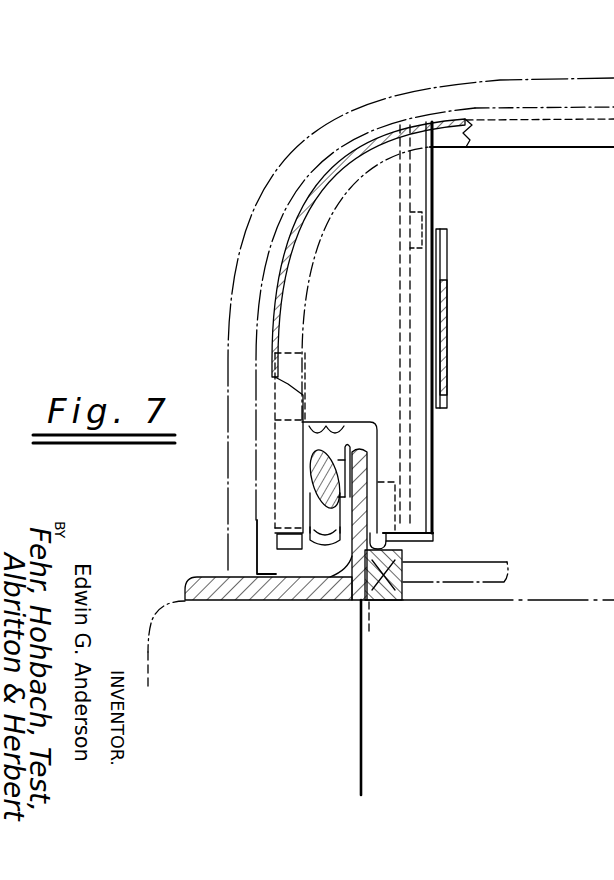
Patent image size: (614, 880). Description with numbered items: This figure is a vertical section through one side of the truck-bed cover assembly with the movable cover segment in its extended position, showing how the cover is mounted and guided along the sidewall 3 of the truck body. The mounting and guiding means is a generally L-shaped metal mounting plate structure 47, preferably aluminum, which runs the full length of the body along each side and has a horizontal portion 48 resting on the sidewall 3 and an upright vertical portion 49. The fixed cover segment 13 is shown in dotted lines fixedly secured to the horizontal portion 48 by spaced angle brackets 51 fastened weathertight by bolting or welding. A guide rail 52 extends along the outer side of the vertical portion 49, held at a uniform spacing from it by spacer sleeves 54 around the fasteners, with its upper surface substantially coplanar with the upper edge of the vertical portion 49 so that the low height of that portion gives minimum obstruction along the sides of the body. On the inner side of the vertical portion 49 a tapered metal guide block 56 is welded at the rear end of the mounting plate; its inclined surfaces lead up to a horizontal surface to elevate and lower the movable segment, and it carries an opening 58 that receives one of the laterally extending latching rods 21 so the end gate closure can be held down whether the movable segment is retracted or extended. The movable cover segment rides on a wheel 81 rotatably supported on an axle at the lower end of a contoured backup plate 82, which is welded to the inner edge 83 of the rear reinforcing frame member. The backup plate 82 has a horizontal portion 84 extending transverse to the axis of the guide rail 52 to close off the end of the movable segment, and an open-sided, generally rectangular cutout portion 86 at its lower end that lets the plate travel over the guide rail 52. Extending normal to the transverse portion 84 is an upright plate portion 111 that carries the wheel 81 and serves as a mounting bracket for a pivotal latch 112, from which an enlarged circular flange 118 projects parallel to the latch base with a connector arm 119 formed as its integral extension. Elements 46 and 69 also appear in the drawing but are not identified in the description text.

The sidewalls 3 is at (153, 632).
The cover segment 13 is at (578, 76).
The latching rods 21 is at (492, 562).
The base flange 46 is at (390, 609).
The mounting plate structure 47 is at (334, 600).
The horizontal portion 48 is at (268, 603).
The vertical portion 49 is at (385, 444).
The angle brackets 51 is at (257, 573).
The guide rail 52 is at (332, 452).
The spacer sleeves 54 is at (352, 450).
The tapered metal guide block 56 is at (403, 600).
The opening 58 is at (371, 628).
The roller guide 69 is at (338, 548).
The wheel 81 is at (388, 543).
The backup plate 82 is at (360, 270).
The inner edge 83 is at (364, 175).
The horizontal portion 84 is at (345, 231).
The cutout portion 86 is at (385, 466).
The upright plate portion 111 is at (400, 372).
The pivotal latch 112 is at (446, 248).
The circular flange 118 is at (442, 267).
The connector arm 119 is at (442, 305).